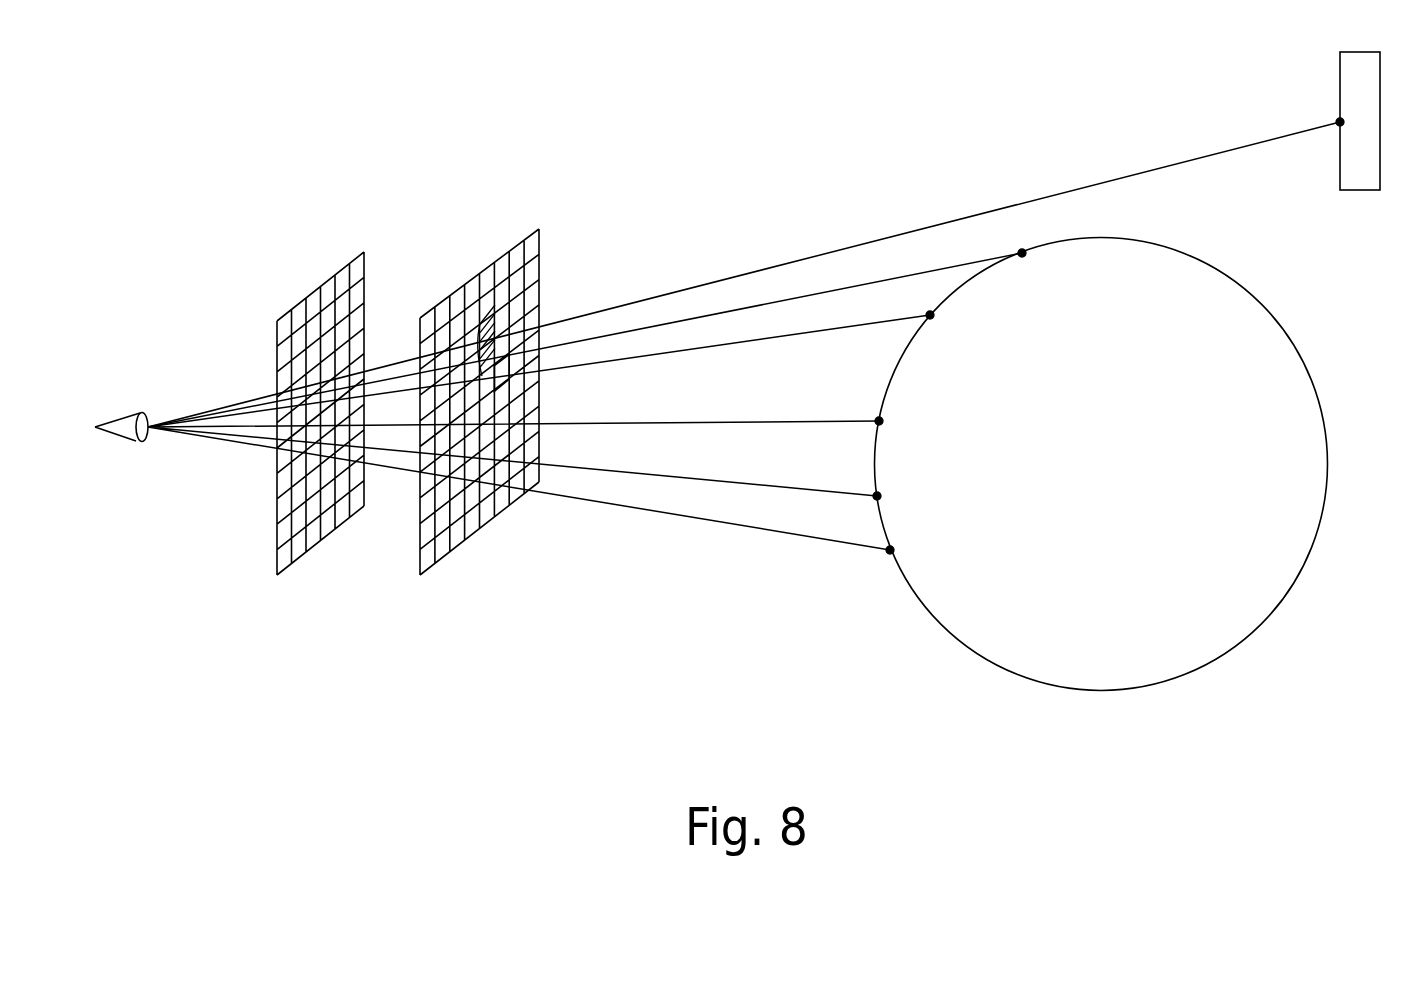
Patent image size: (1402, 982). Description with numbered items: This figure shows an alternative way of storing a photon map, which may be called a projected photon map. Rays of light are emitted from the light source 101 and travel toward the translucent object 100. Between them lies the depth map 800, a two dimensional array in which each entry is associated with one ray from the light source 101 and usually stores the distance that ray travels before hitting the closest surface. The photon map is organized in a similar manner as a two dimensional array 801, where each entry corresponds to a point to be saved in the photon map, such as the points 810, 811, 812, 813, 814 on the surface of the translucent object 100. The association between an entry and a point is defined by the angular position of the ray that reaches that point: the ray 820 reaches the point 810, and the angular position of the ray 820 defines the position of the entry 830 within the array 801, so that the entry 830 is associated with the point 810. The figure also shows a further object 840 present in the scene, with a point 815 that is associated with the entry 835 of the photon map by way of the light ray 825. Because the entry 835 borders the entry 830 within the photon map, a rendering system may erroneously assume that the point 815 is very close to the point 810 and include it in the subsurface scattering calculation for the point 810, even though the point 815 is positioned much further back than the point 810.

The translucent object 100 is at (1092, 692).
The light source 101 is at (128, 441).
The depth map 800 is at (300, 562).
The two dimensional array 801 is at (498, 517).
The point 810 is at (1020, 250).
The point 811 is at (930, 315).
The point 812 is at (879, 421).
The point 813 is at (877, 496).
The point 814 is at (890, 550).
The point 815 is at (1338, 120).
The ray 820 is at (807, 296).
The light ray 825 is at (1250, 143).
The entry 830 is at (500, 375).
The entry 835 is at (482, 318).
The object 840 is at (1362, 190).